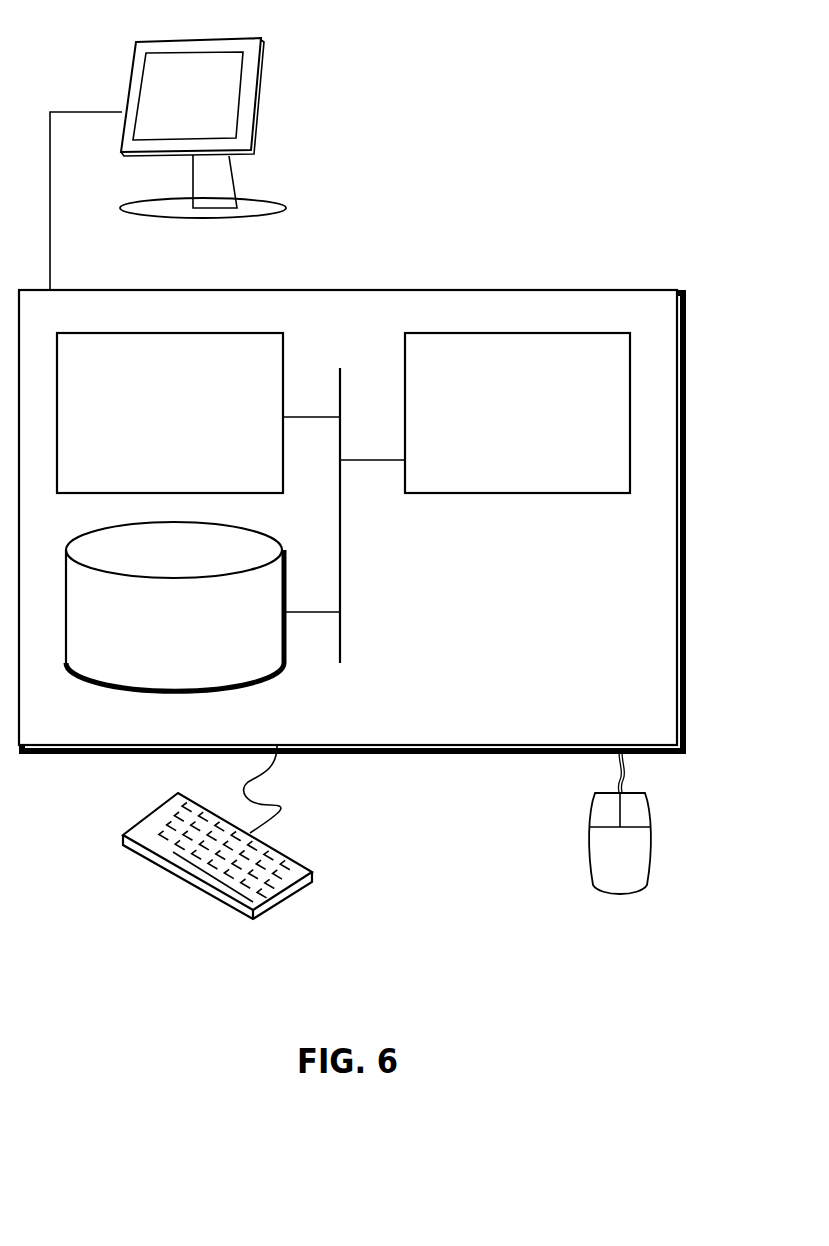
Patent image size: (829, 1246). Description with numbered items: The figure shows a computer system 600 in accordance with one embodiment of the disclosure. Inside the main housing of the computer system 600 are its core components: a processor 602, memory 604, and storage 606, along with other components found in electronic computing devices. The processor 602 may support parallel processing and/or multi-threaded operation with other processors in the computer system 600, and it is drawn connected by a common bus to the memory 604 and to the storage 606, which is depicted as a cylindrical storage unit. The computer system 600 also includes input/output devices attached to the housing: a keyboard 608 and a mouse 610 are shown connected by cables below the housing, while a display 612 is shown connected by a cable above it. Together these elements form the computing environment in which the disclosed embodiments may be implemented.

The computer system 600 is at (395, 268).
The processor 602 is at (540, 424).
The memory 604 is at (192, 424).
The storage 606 is at (200, 636).
The keyboard 608 is at (145, 857).
The mouse 610 is at (640, 867).
The display 612 is at (168, 164).